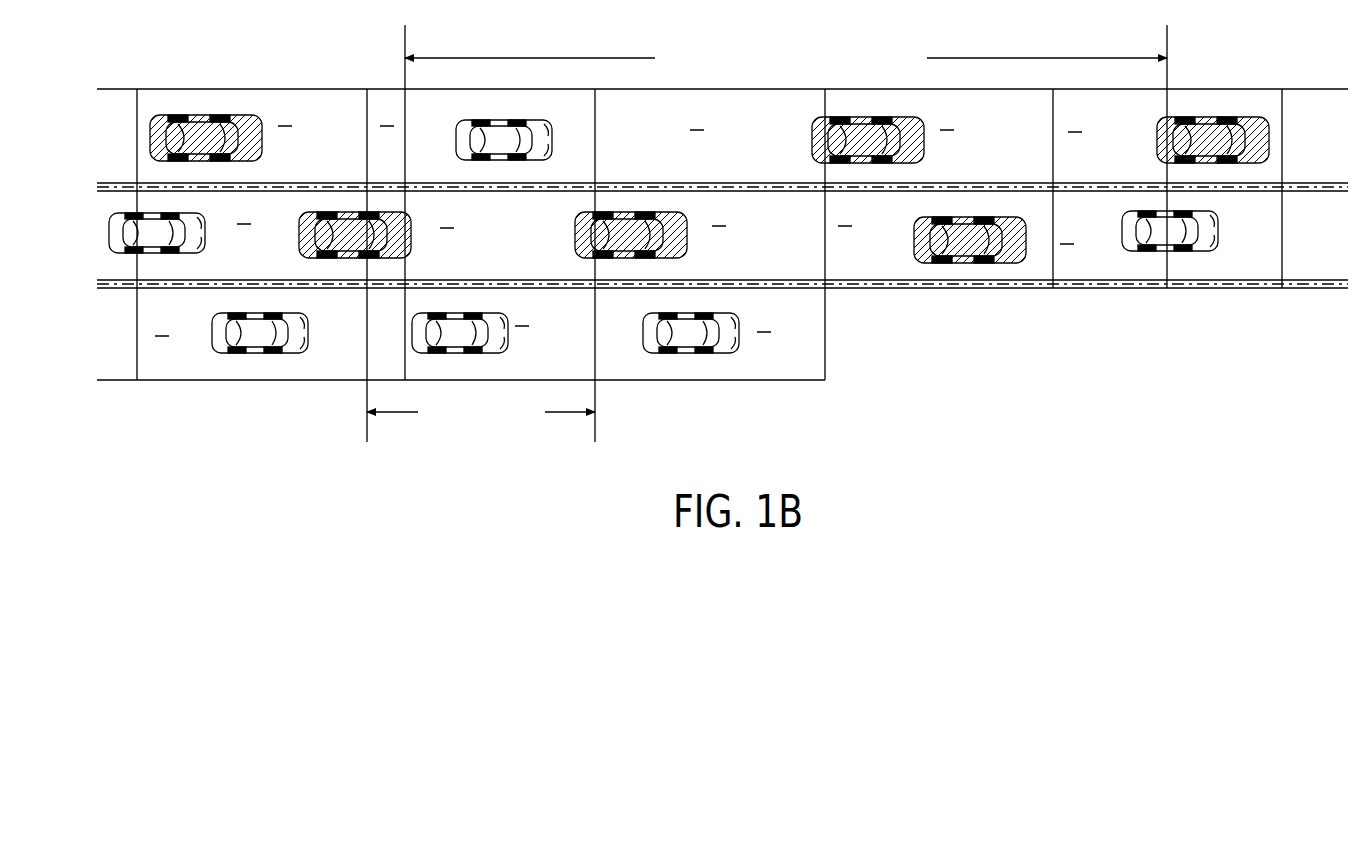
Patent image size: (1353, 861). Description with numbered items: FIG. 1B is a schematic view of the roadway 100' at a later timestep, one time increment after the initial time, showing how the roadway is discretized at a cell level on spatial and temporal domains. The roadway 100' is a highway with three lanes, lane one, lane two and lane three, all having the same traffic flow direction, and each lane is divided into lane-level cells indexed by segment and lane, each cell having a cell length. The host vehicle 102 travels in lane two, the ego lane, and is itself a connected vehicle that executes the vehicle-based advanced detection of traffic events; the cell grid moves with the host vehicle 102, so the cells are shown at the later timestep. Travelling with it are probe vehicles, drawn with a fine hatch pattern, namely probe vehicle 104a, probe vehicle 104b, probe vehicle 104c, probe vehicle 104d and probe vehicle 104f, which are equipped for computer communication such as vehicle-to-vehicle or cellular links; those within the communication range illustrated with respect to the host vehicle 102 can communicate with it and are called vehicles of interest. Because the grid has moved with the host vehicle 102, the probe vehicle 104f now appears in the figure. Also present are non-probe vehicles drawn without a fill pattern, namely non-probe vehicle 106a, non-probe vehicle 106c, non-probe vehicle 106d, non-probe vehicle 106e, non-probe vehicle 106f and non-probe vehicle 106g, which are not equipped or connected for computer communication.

The roadway 100' is at (685, 266).
The host vehicle 102 is at (345, 212).
The probe vehicle 104a is at (880, 118).
The probe vehicle 104b is at (1235, 118).
The probe vehicle 104c is at (680, 218).
The probe vehicle 104d is at (985, 262).
The probe vehicle 104f is at (222, 118).
The non-probe vehicle 106a is at (520, 124).
The non-probe vehicle 106c is at (1185, 250).
The non-probe vehicle 106d is at (480, 313).
The non-probe vehicle 106e is at (690, 352).
The non-probe vehicle 106f is at (118, 218).
The non-probe vehicle 106g is at (262, 352).